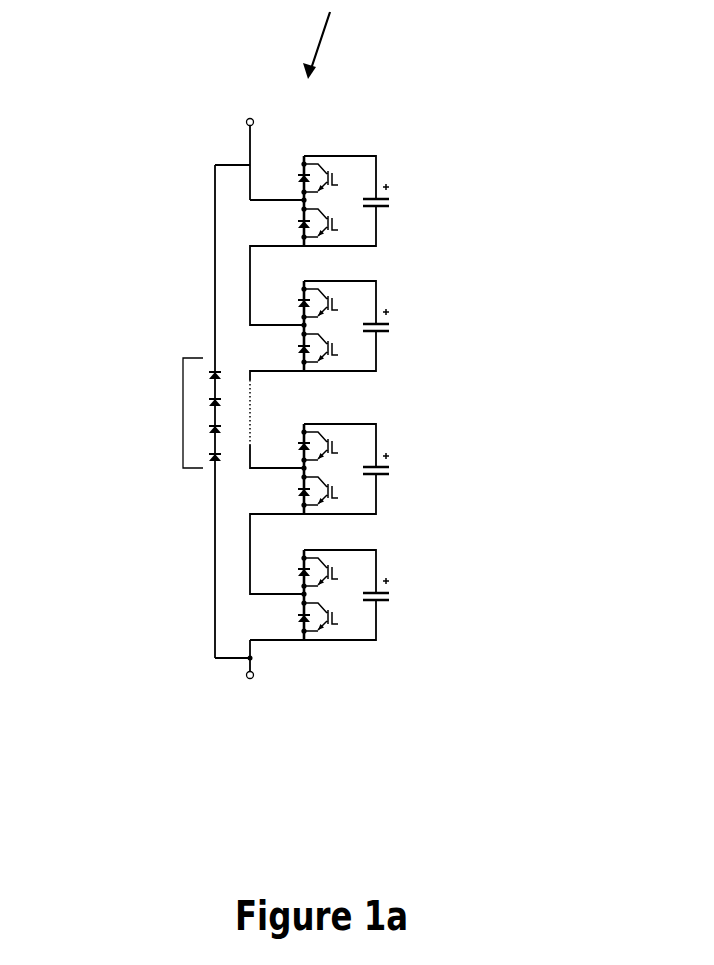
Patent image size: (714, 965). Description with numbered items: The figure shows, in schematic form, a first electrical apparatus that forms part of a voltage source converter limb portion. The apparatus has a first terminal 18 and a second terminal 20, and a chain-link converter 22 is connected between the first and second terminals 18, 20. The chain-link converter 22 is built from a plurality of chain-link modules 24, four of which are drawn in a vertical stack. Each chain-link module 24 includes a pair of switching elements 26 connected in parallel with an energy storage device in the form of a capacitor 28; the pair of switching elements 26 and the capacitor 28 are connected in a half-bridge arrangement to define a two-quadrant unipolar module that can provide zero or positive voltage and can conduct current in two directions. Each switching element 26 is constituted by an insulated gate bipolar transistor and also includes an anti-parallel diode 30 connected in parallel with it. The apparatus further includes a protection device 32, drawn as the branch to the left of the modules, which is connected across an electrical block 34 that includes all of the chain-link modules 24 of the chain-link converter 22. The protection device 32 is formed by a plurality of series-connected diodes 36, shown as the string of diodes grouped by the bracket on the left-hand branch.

The first terminal 18 is at (246, 120).
The second terminal 20 is at (246, 679).
The chain-link converter 22 is at (342, 712).
The chain-link module 24 is at (347, 190).
The switching element 26 is at (323, 168).
The capacitor 28 is at (392, 203).
The anti-parallel diode 30 is at (296, 179).
The protection device 32 is at (128, 272).
The electrical block 34 is at (440, 375).
The series-connected diodes 36 is at (183, 412).